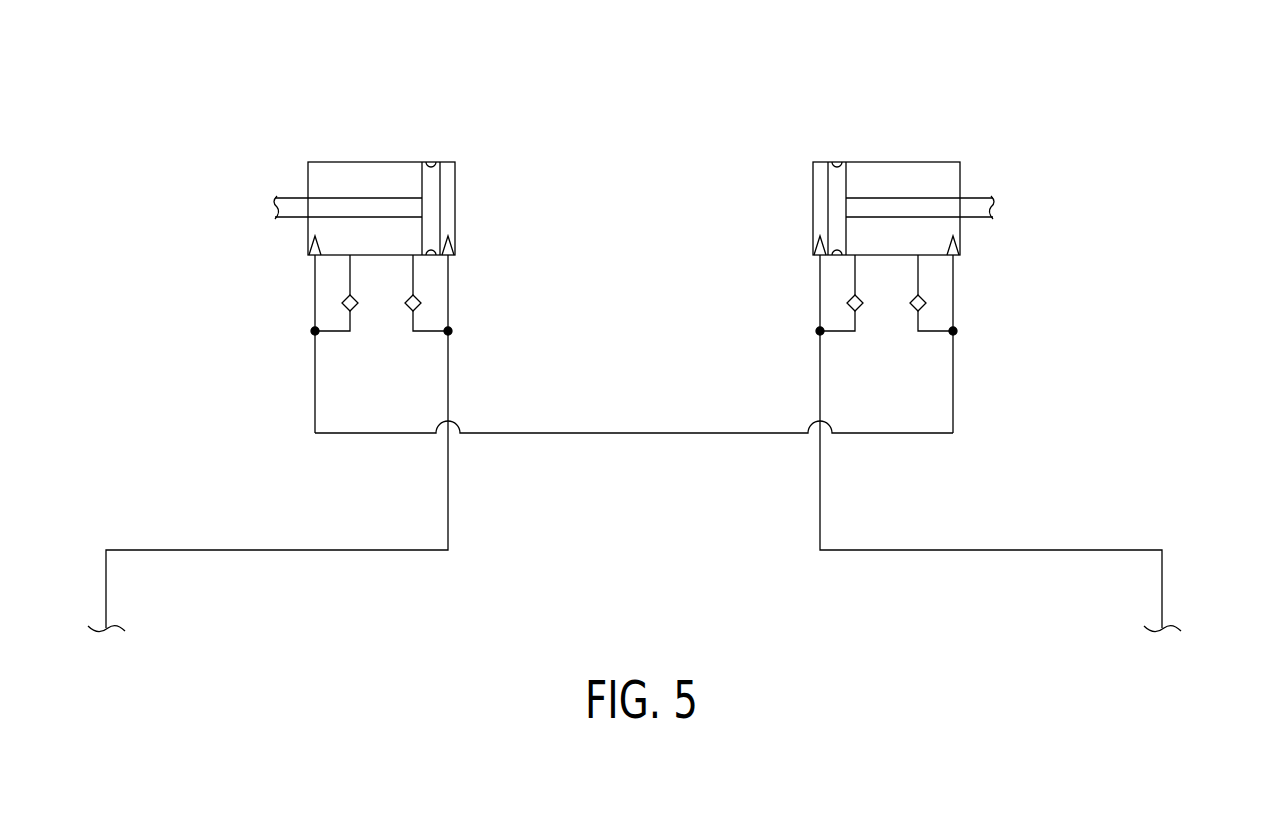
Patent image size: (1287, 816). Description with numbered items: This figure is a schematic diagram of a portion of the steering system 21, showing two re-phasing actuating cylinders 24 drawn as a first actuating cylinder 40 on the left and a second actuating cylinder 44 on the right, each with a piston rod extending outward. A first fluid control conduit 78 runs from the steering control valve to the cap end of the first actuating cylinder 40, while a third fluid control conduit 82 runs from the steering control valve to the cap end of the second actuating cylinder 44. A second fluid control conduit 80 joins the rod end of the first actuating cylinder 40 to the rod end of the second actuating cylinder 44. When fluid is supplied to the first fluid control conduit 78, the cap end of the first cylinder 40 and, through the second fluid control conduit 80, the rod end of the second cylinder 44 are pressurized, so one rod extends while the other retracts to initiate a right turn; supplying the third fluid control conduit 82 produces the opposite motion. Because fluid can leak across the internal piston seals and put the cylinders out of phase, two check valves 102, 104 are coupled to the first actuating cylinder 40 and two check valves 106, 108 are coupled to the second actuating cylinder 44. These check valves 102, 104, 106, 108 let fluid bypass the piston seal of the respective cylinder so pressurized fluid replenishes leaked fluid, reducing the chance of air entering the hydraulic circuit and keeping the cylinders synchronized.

The steering system 21 is at (1113, 230).
The actuator 24 is at (346, 163).
The first actuating cylinder 40 is at (362, 150).
The second actuating cylinder 44 is at (907, 150).
The first fluid control conduit 78 is at (280, 550).
The second fluid control conduit 80 is at (632, 432).
The third fluid control conduit 82 is at (988, 550).
The check valve 102 is at (360, 313).
The check valve 104 is at (403, 313).
The check valve 106 is at (865, 313).
The check valve 108 is at (908, 313).